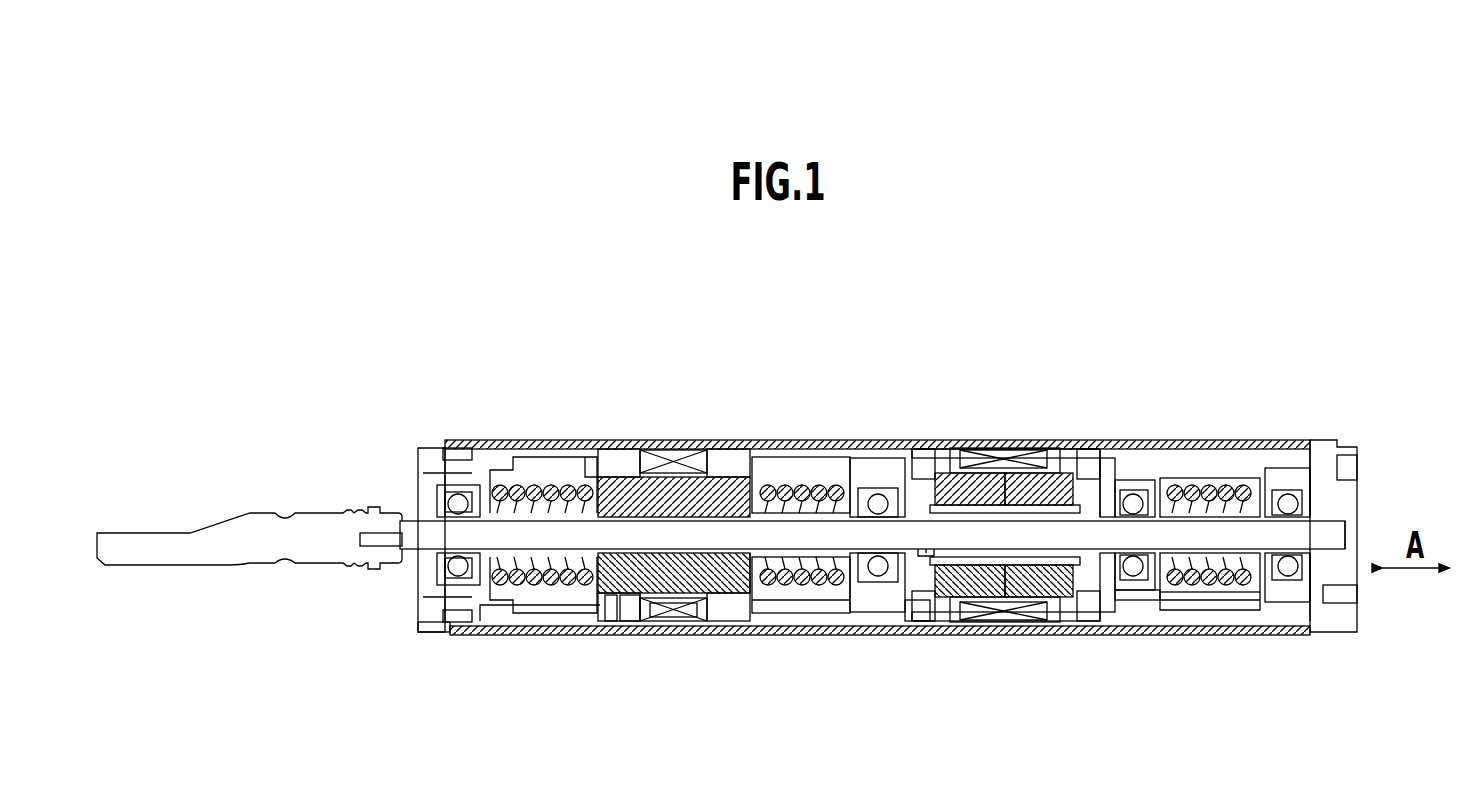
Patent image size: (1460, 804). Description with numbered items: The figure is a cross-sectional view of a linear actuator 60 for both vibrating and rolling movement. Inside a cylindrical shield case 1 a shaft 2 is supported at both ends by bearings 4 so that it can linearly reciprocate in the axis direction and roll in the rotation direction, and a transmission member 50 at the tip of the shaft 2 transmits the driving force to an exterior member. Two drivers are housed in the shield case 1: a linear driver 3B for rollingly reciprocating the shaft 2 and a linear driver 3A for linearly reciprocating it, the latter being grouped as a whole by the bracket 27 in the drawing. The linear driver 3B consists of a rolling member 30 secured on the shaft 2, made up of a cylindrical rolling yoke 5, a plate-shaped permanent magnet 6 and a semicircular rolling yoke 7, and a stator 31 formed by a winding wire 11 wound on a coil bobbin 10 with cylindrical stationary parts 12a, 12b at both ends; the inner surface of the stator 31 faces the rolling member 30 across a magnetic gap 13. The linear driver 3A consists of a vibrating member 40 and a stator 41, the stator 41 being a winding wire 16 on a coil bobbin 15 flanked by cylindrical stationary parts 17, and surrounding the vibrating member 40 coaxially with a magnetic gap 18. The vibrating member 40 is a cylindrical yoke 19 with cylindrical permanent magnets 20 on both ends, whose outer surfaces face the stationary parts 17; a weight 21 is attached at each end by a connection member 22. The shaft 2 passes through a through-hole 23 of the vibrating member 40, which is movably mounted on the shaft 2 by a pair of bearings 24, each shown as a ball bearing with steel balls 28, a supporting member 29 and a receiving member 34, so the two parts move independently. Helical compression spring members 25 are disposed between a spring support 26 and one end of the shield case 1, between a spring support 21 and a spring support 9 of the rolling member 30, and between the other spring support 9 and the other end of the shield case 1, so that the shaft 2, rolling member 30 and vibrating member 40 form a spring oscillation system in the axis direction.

The shield case 1 is at (510, 636).
The shaft 2 is at (483, 636).
The linear driver 3A is at (1105, 330).
The linear driver 3B is at (700, 682).
The bearing 4 is at (440, 636).
The cylindrical rolling yoke 5 is at (610, 636).
The plate-shaped permanent magnet 6 is at (628, 636).
The semicircular rolling yoke 7 is at (655, 636).
The spring support 9 is at (558, 447).
The coil bobbin 10 is at (638, 447).
The winding wire 11 is at (665, 447).
The cylindrical stationary part 12a is at (612, 447).
The cylindrical stationary part 12b is at (718, 447).
The magnetic gap 13 is at (596, 462).
The coil bobbin 15 is at (945, 447).
The winding wire 16 is at (978, 447).
The cylindrical stationary part 17 is at (938, 447).
The magnetic gap 18 is at (1100, 447).
The cylindrical yoke 19 is at (995, 636).
The cylindrical permanent magnet 20 is at (960, 636).
The weight 21 is at (815, 636).
The connection member 22 is at (1118, 447).
The through-hole 23 is at (912, 636).
The bearing 24 is at (865, 447).
The spring member 25 is at (495, 447).
The spring support 26 is at (1205, 636).
The stator assembly 27 is at (817, 263).
The steel ball 28 is at (848, 452).
The supporting member 29 is at (890, 447).
The rolling member 30 is at (585, 722).
The stator 31 is at (593, 316).
The receiving member 34 is at (1120, 636).
The vibrating member 40 is at (1065, 722).
The stator 41 is at (1095, 316).
The transmission member 50 is at (232, 553).
The linear actuator 60 is at (508, 284).